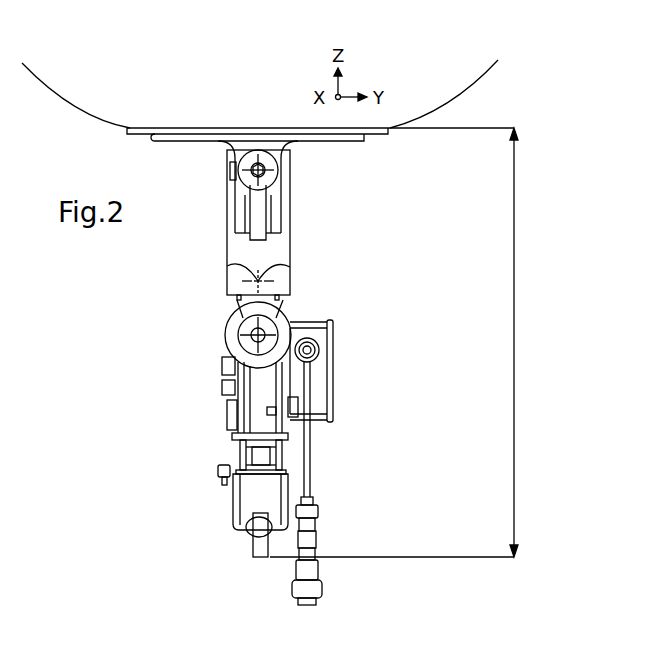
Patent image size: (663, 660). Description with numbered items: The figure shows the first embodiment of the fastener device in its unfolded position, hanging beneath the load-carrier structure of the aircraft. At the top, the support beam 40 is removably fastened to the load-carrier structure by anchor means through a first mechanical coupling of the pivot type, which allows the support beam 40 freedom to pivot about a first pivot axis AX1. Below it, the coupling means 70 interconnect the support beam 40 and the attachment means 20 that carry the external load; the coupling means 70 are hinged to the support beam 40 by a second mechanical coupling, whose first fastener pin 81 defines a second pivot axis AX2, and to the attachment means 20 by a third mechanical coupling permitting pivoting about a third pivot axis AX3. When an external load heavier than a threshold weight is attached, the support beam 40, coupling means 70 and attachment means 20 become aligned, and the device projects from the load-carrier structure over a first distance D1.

The attachment means 20 is at (255, 418).
The support beam 40 is at (290, 243).
The coupling means 70 is at (283, 320).
The first fastener pin 81 is at (227, 265).
The first pivot axis AX1 is at (258, 170).
The second pivot axis AX2 is at (290, 267).
The third pivot axis AX3 is at (254, 335).
The first distance D1 is at (411, 342).